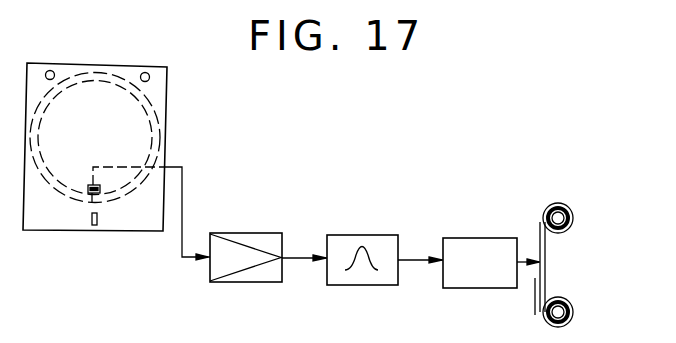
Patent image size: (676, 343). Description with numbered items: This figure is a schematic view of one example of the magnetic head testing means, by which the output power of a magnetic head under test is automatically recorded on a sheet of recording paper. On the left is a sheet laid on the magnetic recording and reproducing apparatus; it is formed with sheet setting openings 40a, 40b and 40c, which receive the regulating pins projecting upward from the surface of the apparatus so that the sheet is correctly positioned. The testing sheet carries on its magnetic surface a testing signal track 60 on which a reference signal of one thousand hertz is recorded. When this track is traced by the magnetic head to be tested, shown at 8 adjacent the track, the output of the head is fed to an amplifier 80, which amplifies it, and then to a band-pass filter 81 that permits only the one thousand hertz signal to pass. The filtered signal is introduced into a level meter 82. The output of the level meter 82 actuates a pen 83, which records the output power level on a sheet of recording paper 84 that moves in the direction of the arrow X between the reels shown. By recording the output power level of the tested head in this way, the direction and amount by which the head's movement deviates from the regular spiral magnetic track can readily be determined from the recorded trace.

The magnetic head / sensor element 8 is at (89, 183).
The sheet setting opening 40a is at (50, 70).
The sheet setting opening 40b is at (145, 72).
The sheet setting opening 40c is at (92, 219).
The testing signal track 60 is at (157, 108).
The amplifier 80 is at (252, 233).
The band-pass filter 81 is at (361, 235).
The level meter 82 is at (475, 238).
The pen 83 is at (524, 257).
The recording paper 84 is at (546, 250).
The arrow x X is at (535, 298).